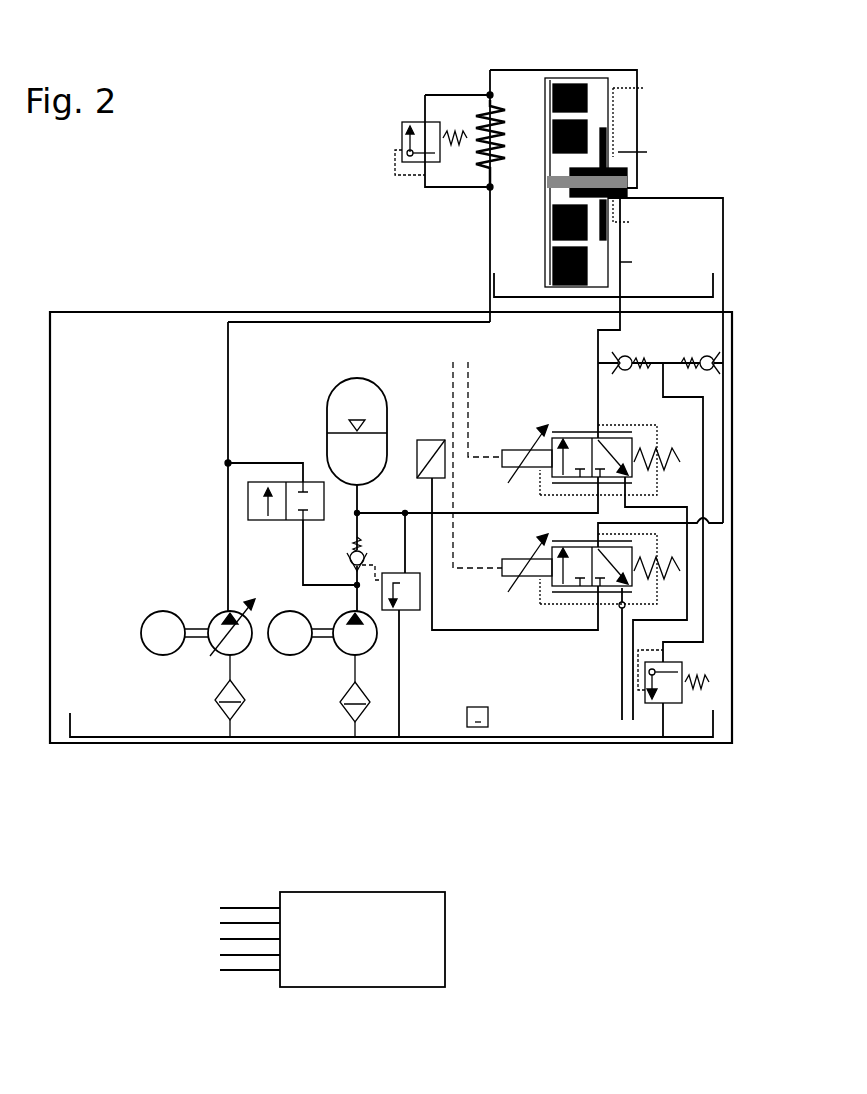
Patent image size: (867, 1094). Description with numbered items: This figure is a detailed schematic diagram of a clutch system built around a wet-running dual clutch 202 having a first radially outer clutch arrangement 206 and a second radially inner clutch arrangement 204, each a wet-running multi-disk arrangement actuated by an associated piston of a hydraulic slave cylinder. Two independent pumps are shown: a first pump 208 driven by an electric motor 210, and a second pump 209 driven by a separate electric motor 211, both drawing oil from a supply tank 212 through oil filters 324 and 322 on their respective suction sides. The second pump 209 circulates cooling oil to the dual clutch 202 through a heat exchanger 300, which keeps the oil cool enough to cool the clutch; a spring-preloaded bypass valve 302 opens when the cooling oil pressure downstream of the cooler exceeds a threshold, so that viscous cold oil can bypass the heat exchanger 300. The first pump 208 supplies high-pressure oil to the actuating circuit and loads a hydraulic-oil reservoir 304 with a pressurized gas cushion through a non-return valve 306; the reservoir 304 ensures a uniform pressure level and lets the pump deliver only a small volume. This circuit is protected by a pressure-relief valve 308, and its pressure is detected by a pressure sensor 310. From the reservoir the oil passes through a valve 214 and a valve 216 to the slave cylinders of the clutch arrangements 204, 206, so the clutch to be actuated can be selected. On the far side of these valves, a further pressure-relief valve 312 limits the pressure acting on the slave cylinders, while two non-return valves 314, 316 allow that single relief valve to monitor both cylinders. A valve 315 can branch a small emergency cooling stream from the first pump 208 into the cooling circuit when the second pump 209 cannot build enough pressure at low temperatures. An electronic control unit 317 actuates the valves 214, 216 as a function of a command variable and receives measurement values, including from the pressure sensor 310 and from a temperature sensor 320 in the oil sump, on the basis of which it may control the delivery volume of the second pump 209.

The wet-running dual clutch 202 is at (598, 80).
The second radially inner clutch arrangement 204 is at (612, 118).
The first radially outer clutch arrangement 206 is at (546, 82).
The first pump 208 is at (360, 648).
The second pump 209 is at (228, 652).
The electric motor 210 is at (292, 655).
The electric motor 211 is at (165, 611).
The supply tank 212 is at (494, 283).
The valve 214 is at (583, 440).
The valve 216 is at (572, 585).
The heat exchanger 300 is at (478, 118).
The bypass valve 302 is at (400, 136).
The hydraulic-oil reservoir 304 is at (355, 388).
The non-return valve 306 is at (353, 540).
The pressure-relief valve 308 is at (413, 608).
The pressure sensor 310 is at (432, 440).
The pressure-relief valve 312 is at (670, 705).
The non-return valve 314 is at (627, 356).
The valve 315 is at (250, 500).
The non-return valve 316 is at (710, 362).
The electronic control unit 317 is at (416, 973).
The temperature sensor 320 is at (481, 727).
The oil filter 322 is at (238, 712).
The oil filter 324 is at (358, 722).